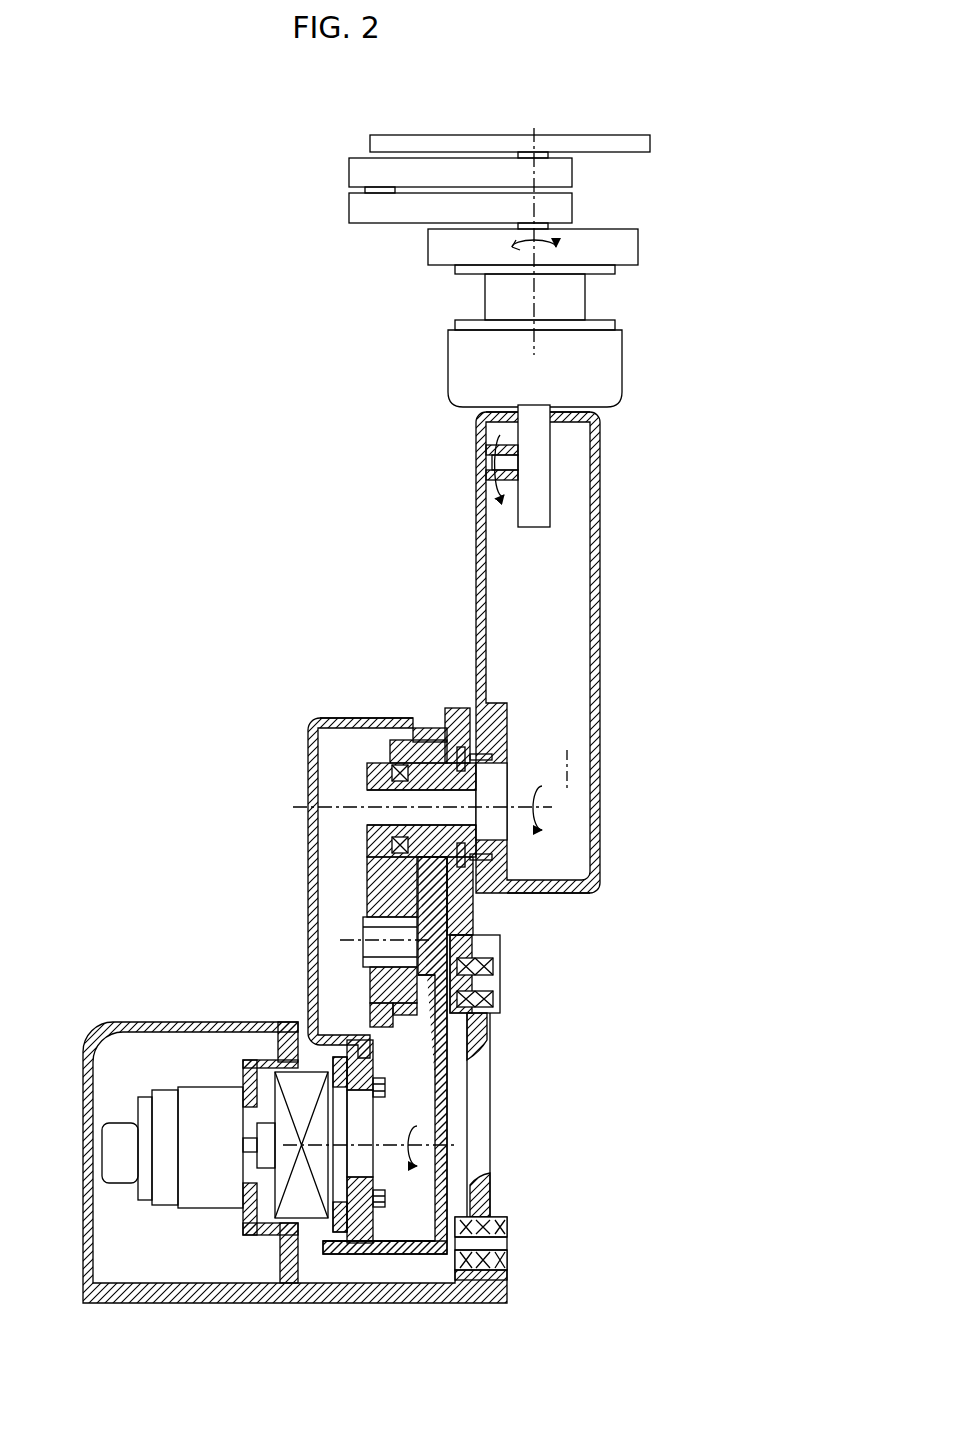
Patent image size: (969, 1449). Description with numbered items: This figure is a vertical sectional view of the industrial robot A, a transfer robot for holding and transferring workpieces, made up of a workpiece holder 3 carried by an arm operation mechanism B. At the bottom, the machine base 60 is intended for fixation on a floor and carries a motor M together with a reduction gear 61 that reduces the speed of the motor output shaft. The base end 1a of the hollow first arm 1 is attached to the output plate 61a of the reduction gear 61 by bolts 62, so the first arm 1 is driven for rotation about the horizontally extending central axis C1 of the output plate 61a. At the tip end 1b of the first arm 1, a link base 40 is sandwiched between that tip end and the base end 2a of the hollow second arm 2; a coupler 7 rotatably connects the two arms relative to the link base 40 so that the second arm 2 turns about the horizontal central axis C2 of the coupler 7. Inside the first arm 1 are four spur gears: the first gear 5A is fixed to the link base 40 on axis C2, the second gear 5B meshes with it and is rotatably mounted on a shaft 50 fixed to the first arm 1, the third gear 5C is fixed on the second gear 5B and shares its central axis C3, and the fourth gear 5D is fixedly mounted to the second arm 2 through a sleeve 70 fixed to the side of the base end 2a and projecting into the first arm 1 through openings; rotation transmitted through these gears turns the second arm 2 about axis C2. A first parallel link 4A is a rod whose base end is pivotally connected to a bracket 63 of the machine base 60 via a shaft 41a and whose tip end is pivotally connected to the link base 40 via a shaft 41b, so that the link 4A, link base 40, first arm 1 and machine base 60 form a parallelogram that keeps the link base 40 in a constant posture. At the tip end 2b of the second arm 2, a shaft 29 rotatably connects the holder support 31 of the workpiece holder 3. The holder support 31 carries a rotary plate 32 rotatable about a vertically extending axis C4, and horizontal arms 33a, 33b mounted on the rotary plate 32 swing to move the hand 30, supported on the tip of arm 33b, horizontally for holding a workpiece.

The hand 30 is at (628, 135).
The horizontal arm 33b is at (572, 177).
The horizontal arm 33a is at (572, 207).
The rotary plate 32 is at (638, 250).
The workpiece holder 3 is at (633, 334).
The holder support 31 is at (450, 377).
The vertically extending axis C4 is at (536, 298).
The industrial robot A is at (283, 294).
The second arm 2 is at (600, 596).
The tip end 2b is at (601, 428).
The base end 2a is at (602, 843).
The shaft 29 is at (486, 460).
The coupler 7 is at (461, 702).
The sleeve 70 is at (463, 788).
The central axis C2 is at (443, 774).
The tip end 1b is at (320, 722).
The base end 1a is at (365, 1288).
The first arm 1 is at (310, 864).
The arm operation mechanism B is at (282, 712).
The first gear 5A is at (400, 740).
The second gear 5B is at (396, 1010).
The third gear 5C is at (370, 996).
The fourth gear 5D is at (353, 770).
The shaft 50 is at (365, 940).
The central axis C3 is at (340, 940).
The link base 40 is at (500, 942).
The shaft 41b is at (493, 988).
The shaft 41a is at (507, 1249).
The first parallel link 4A is at (490, 1070).
The central axis C1 is at (438, 1124).
The bracket 63 is at (507, 1226).
The machine base 60 is at (243, 1285).
The motor M is at (208, 1103).
The reduction gear 61 is at (307, 1077).
The output plate 61a is at (360, 1117).
The bolts 62 is at (386, 1087).